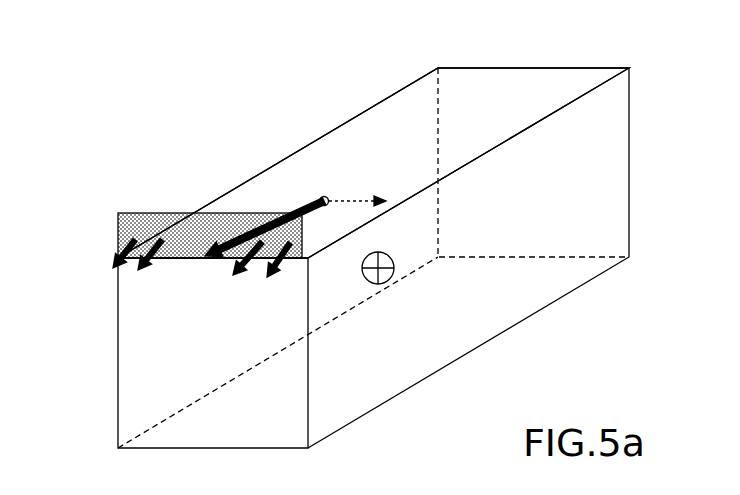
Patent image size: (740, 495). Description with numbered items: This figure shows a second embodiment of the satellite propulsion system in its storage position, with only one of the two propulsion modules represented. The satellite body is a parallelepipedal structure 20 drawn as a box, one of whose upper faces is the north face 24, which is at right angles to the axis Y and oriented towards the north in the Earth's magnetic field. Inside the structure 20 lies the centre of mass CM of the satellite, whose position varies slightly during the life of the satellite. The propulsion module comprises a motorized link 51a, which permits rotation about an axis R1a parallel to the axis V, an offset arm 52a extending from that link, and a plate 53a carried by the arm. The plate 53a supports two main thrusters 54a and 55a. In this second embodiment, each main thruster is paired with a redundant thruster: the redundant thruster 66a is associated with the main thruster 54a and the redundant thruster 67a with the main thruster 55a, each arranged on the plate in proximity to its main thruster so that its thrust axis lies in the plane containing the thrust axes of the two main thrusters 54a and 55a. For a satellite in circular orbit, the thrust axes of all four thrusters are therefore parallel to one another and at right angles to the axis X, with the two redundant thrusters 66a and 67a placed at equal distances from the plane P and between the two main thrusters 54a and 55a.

The parallelepipedal structure 20 is at (573, 101).
The north face 24 is at (525, 78).
The plate 53a is at (133, 213).
The motorized link 51a is at (318, 195).
The offset arm 52a is at (295, 212).
The rotation axis R1a is at (357, 198).
The main thruster 54a is at (113, 263).
The redundant thruster 66a is at (137, 270).
The redundant thruster 67a is at (235, 282).
The main thruster 55a is at (275, 281).
The centre of mass CM is at (393, 273).